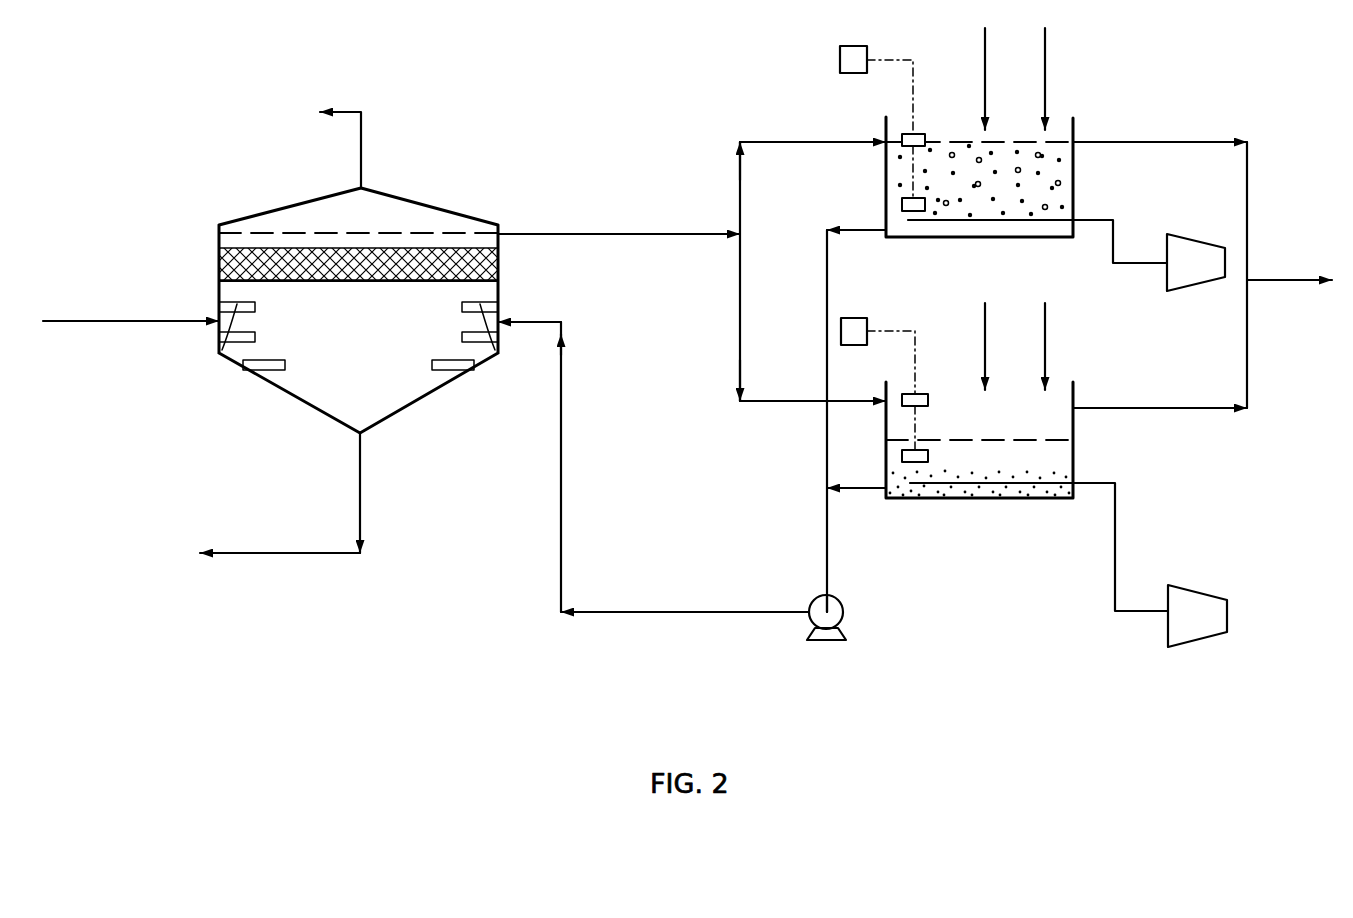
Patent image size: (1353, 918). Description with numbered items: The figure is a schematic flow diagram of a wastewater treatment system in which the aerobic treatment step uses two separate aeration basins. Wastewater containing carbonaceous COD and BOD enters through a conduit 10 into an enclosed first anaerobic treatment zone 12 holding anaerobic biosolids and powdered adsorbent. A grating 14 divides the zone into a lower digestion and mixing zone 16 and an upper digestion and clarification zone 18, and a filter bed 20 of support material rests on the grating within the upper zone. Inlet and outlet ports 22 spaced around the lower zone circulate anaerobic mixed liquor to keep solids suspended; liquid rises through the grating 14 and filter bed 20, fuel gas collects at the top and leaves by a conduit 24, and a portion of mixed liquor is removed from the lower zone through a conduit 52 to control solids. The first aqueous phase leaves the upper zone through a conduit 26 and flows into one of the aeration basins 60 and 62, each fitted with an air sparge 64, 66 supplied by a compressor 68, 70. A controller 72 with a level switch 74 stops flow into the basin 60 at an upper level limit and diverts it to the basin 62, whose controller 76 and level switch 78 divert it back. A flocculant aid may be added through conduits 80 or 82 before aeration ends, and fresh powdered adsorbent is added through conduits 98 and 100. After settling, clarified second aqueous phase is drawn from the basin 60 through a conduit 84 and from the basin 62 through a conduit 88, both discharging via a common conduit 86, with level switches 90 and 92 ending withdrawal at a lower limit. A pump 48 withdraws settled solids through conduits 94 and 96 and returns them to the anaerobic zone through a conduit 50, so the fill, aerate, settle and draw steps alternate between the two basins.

The conduit 10 is at (150, 321).
The first anaerobic treatment zone 12 is at (260, 205).
The grating 14 is at (497, 283).
The lower digestion and mixing zone 16 is at (381, 346).
The upper digestion and clarification zone 18 is at (378, 245).
The filter bed 20 is at (495, 258).
The inlet and outlet ports 22 is at (270, 385).
The conduit 24 is at (363, 153).
The conduit 26 is at (638, 234).
The pump 48 is at (815, 600).
The conduit 50 is at (562, 515).
The conduit 52 is at (361, 513).
The aeration basin 60 is at (886, 172).
The aeration basin 62 is at (1073, 445).
The air sparge 64 is at (955, 222).
The air sparge 66 is at (943, 485).
The compressor 68 is at (1198, 240).
The compressor 70 is at (1185, 585).
The controller 72 is at (840, 56).
The level switch 74 is at (921, 132).
The controller 76 is at (848, 318).
The level switch 78 is at (920, 392).
The conduit 80 is at (975, 50).
The conduit 82 is at (983, 312).
The conduit 84 is at (1133, 142).
The conduit 86 is at (1277, 280).
The conduit 88 is at (1247, 360).
The level switch 90 is at (903, 203).
The level switch 92 is at (920, 448).
The conduit 94 is at (840, 230).
The conduit 96 is at (852, 490).
The conduit 98 is at (1046, 60).
The conduit 100 is at (1046, 330).